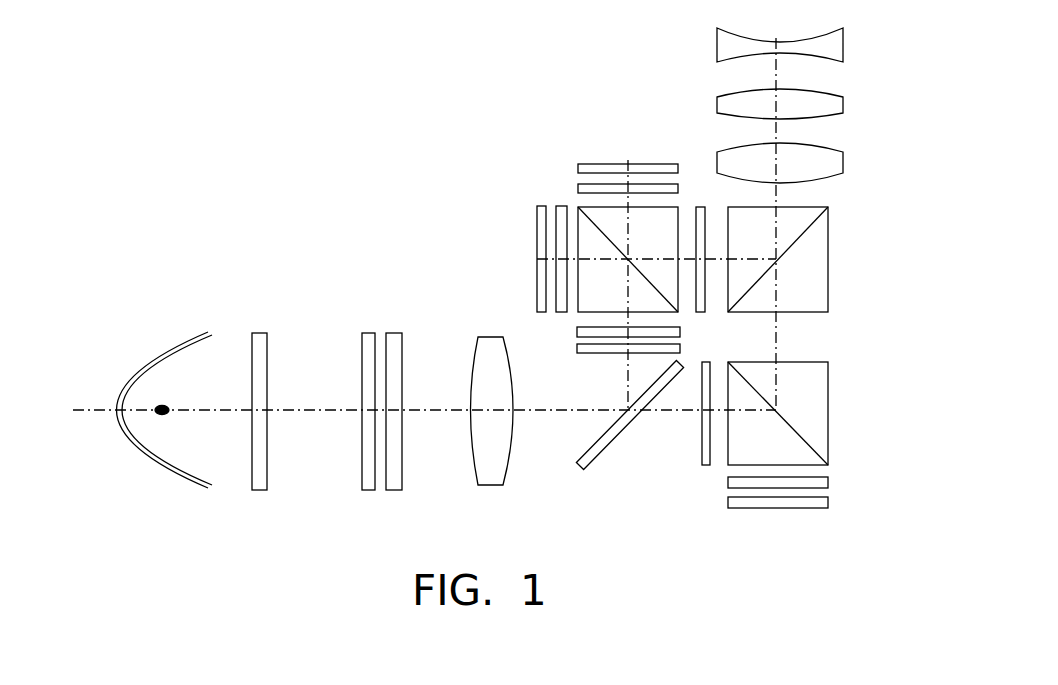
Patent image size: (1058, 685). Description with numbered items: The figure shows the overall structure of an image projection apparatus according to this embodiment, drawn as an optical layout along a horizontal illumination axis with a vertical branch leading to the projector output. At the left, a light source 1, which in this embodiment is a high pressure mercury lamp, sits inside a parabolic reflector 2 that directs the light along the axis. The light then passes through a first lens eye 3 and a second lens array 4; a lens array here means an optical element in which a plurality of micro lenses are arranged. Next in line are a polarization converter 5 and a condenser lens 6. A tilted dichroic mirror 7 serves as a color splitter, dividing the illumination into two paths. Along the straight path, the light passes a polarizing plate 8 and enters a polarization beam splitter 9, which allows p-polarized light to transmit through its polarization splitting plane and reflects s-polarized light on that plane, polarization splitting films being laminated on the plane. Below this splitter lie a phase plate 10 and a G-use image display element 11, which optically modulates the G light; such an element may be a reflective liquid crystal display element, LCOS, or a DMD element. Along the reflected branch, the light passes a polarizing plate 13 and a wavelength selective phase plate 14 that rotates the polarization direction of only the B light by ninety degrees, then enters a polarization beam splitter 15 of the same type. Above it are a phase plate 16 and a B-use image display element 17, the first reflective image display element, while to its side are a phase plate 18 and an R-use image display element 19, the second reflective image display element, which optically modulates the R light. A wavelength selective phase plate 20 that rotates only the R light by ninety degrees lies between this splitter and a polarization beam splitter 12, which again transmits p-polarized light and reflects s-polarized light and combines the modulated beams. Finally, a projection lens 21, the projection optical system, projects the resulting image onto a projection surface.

The light source 1 is at (166, 405).
The parabolic reflector 2 is at (183, 475).
The first lens eye 3 is at (260, 490).
The second lens array 4 is at (366, 490).
The polarization converter 5 is at (393, 490).
The condenser lens 6 is at (484, 487).
The dichroic mirror 7 is at (595, 463).
The polarizing plate 8 is at (705, 466).
The polarization beam splitter 9 is at (828, 437).
The phase plate 10 is at (828, 482).
The G-use image display element 11 is at (828, 503).
The polarization beam splitter 12 is at (828, 277).
The polarizing plate 13 is at (577, 350).
The wavelength selective phase plate 14 is at (577, 331).
The polarization beam splitter 15 is at (628, 259).
The phase plate 16 is at (678, 188).
The B-use image display element 17 is at (678, 168).
The phase plate 18 is at (559, 205).
The R-use image display element 19 is at (537, 206).
The wavelength selective phase plate 20 is at (700, 312).
The projection lens 21 is at (850, 8).